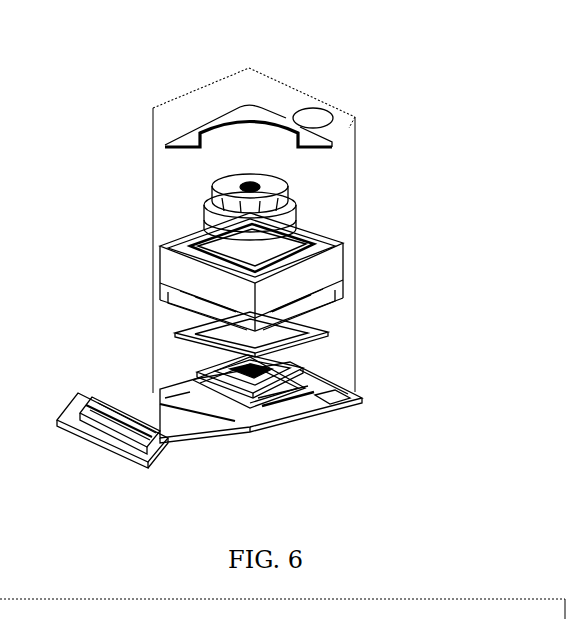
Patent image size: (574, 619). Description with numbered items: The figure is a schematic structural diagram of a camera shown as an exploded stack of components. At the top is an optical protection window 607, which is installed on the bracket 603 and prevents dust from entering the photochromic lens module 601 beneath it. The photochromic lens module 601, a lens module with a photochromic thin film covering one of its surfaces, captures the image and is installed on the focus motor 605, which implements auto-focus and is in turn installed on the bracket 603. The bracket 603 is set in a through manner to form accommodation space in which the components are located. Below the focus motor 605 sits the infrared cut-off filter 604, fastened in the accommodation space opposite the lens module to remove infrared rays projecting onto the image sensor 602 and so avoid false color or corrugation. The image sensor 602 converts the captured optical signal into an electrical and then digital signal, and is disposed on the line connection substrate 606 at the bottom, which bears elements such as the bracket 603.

The photochromic lens module 601 is at (297, 207).
The image sensor 602 is at (300, 366).
The bracket 603 is at (283, 82).
The infrared cut-off filter 604 is at (322, 325).
The focus motor 605 is at (343, 257).
The line connection substrate 606 is at (363, 402).
The optical protection window 607 is at (340, 128).